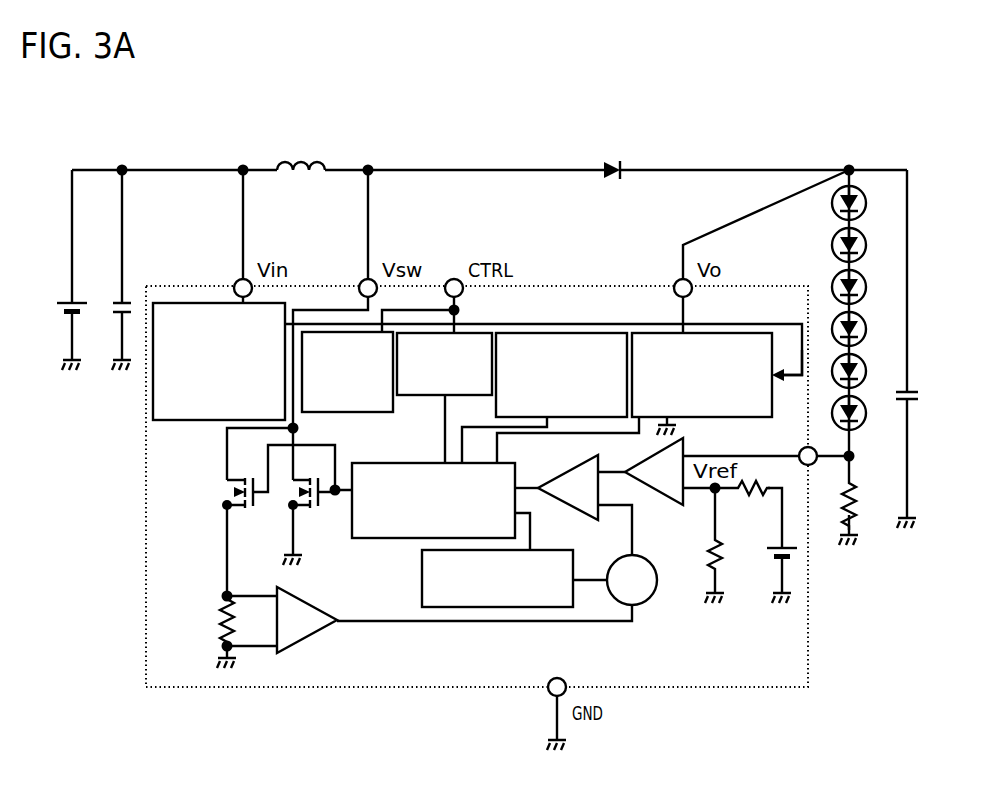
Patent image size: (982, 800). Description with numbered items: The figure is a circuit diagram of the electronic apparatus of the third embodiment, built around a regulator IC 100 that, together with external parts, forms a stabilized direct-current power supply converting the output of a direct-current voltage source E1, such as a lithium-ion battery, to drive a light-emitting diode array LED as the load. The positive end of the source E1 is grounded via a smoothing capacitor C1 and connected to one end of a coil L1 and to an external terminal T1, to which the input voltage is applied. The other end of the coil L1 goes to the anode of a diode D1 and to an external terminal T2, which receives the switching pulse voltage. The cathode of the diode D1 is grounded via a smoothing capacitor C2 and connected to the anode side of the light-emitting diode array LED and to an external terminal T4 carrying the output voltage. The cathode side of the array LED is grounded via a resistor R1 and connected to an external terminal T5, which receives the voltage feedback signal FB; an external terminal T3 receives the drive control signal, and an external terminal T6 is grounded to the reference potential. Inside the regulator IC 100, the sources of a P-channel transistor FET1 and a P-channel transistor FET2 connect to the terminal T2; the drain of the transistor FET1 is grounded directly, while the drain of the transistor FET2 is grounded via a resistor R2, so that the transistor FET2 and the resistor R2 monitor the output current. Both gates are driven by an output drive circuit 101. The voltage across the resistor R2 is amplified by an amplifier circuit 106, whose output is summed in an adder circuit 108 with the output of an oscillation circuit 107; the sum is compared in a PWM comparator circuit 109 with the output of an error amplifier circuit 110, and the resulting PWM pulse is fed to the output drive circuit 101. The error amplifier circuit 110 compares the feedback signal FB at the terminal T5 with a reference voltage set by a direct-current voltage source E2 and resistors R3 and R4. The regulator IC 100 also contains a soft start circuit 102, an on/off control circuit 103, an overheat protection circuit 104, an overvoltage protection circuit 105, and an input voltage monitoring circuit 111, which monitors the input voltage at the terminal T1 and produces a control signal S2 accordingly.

The regulator IC 100 is at (146, 520).
The output drive circuit 101 is at (400, 538).
The soft start circuit 102 is at (370, 412).
The on/off control circuit 103 is at (430, 395).
The overheat protection circuit 104 is at (600, 417).
The overvoltage protection circuit 105 is at (700, 417).
The amplifier circuit 106 is at (305, 643).
The oscillation circuit 107 is at (545, 550).
The adder circuit 108 is at (646, 601).
The PWM comparator circuit 109 is at (556, 478).
The error amplifier circuit 110 is at (640, 497).
The input voltage monitoring circuit 111 is at (285, 303).
The direct-current voltage source E1 is at (80, 300).
The smoothing capacitor C1 is at (124, 300).
The coil L1 is at (301, 182).
The diode D1 is at (619, 185).
The external terminal T1 is at (238, 284).
The external terminal T2 is at (363, 284).
The external terminal T3 is at (449, 284).
The external terminal T4 is at (678, 284).
The external terminal T5 is at (821, 468).
The voltage feedback signal FB is at (826, 484).
The external terminal T6 is at (551, 696).
The light-emitting diode array LED is at (830, 183).
The smoothing capacitor C2 is at (905, 389).
The control signal S2 is at (794, 378).
The resistor R1 is at (866, 505).
The resistor R2 is at (243, 621).
The resistor R3 is at (703, 554).
The resistor R4 is at (752, 501).
The direct-current voltage source E2 is at (770, 556).
The P-channel field-effect transistor FET1 is at (308, 510).
The P-channel field-effect transistor FET2 is at (240, 510).